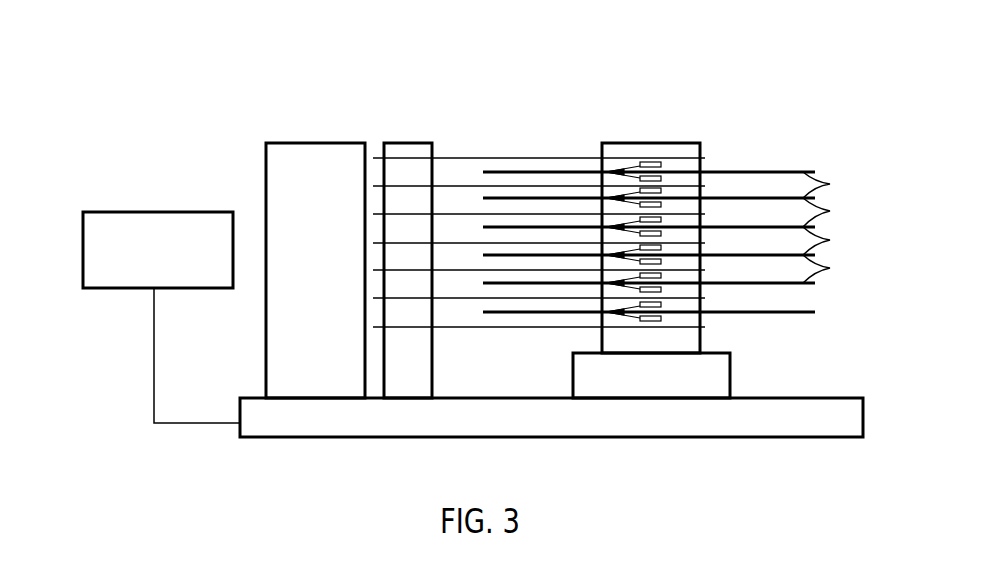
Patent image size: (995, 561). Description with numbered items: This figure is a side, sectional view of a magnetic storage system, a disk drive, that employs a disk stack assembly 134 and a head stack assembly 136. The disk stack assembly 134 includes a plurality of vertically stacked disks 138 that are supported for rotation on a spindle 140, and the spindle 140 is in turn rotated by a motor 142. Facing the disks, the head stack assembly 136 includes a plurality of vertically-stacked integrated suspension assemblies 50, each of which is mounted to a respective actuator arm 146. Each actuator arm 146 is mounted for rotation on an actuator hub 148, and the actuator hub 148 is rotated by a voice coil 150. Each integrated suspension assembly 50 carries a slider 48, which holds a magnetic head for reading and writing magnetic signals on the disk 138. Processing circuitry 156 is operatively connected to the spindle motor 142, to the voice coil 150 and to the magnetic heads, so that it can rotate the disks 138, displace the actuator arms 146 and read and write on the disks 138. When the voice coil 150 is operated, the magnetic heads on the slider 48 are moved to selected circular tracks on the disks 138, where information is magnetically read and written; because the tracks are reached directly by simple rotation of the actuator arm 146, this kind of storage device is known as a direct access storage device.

The disk stack assembly 134 is at (797, 83).
The head stack assembly 136 is at (326, 77).
The disks 138 is at (676, 241).
The spindle 140 is at (658, 142).
The motor 142 is at (732, 378).
The actuator arm 146 is at (562, 157).
The actuator hub 148 is at (418, 142).
The voice coil 150 is at (308, 142).
The slider 48 is at (612, 183).
The integrated suspension assembly 50 is at (618, 188).
The processing circuitry 156 is at (140, 211).